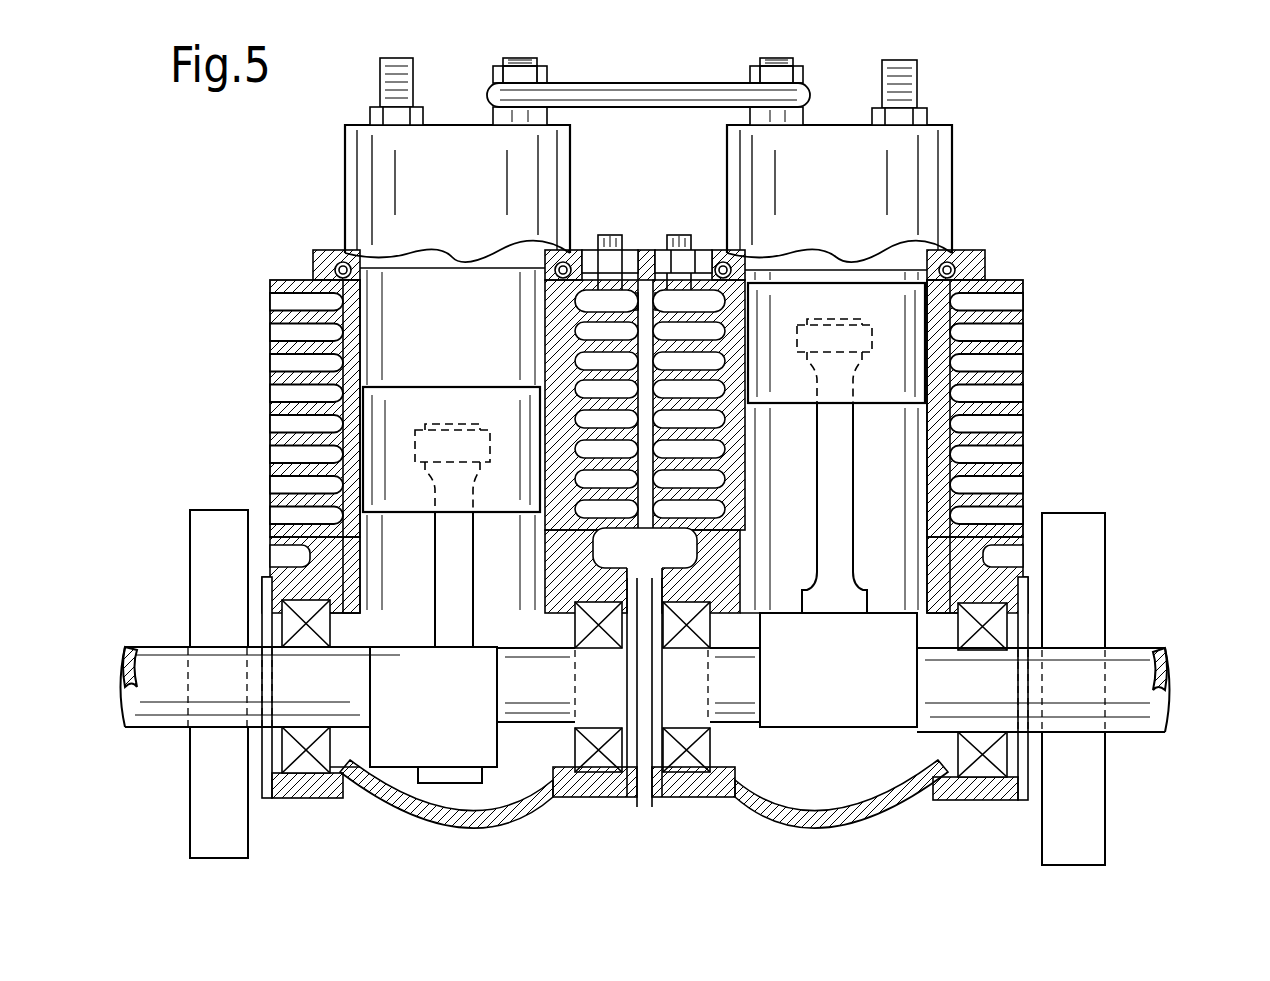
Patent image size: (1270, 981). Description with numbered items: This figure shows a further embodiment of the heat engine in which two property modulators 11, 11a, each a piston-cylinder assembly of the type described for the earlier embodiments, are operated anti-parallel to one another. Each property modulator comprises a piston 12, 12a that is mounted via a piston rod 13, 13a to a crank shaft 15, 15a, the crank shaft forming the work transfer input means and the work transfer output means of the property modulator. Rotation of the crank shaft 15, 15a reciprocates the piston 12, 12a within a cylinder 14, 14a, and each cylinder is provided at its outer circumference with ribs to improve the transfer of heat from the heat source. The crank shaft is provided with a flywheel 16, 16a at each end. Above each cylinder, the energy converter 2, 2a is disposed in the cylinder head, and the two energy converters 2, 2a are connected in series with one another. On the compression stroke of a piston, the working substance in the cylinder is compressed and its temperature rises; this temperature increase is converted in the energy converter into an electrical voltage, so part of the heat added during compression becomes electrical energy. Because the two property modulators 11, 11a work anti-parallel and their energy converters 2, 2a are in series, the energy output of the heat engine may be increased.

The energy converter 2 is at (345, 160).
The energy converter 2a is at (953, 155).
The property modulator 11 is at (419, 440).
The property modulator 11a is at (879, 441).
The piston 12 is at (510, 537).
The piston 12a is at (893, 377).
The piston rod 13 is at (447, 576).
The piston rod 13a is at (840, 548).
The cylinder 14 is at (268, 440).
The cylinder 14a is at (1023, 443).
The crank shaft 15 is at (152, 727).
The crank shaft 15a is at (1128, 657).
The flywheel 16 is at (203, 860).
The flywheel 16a is at (1073, 866).